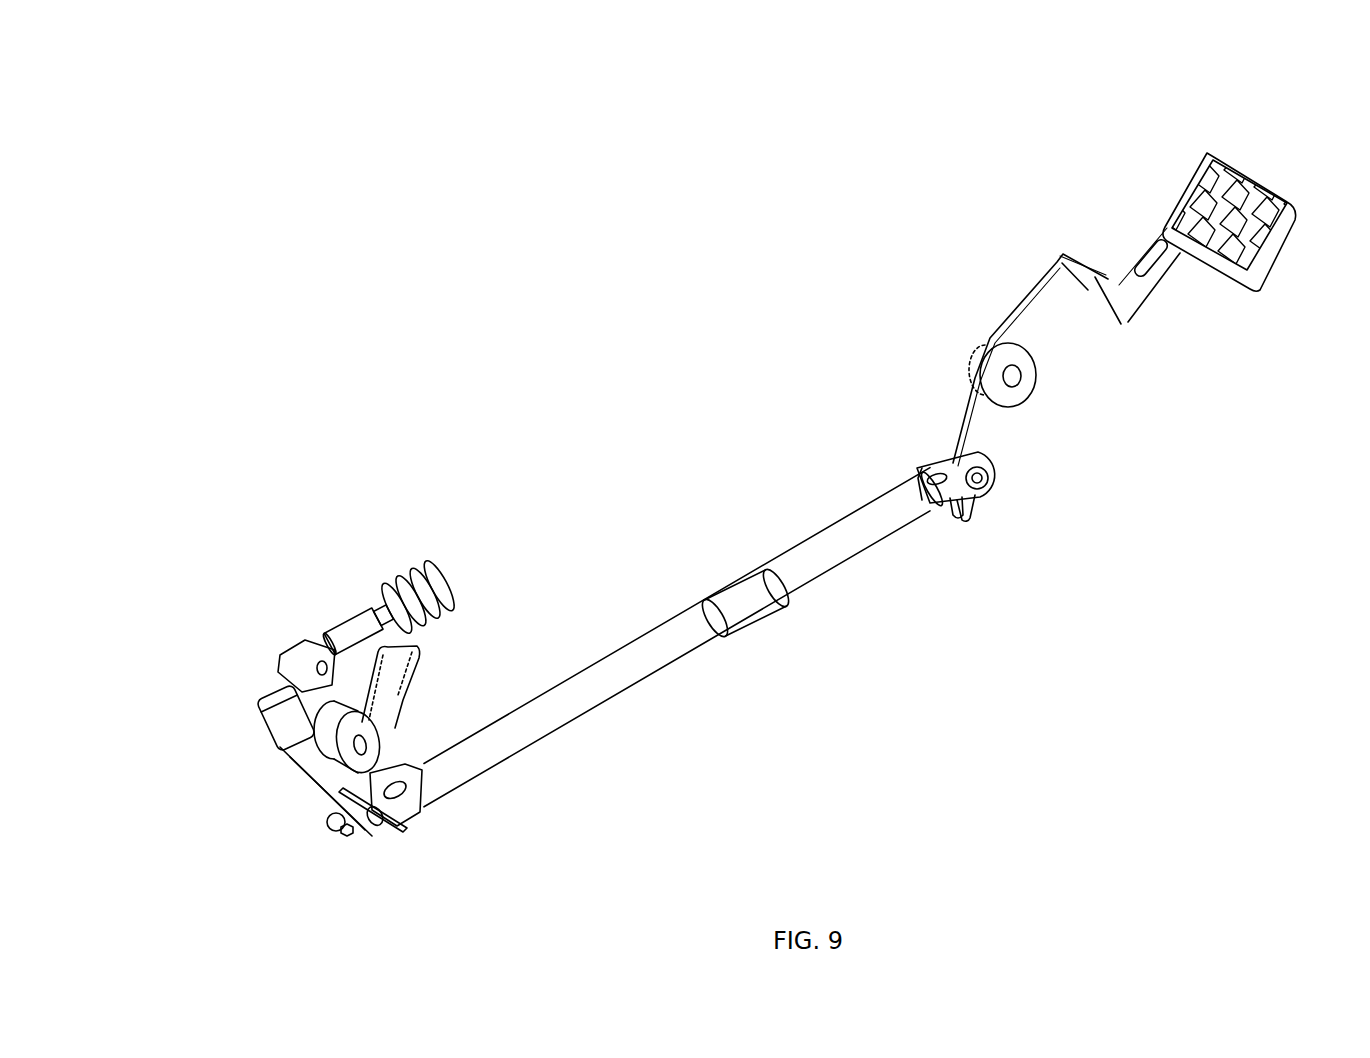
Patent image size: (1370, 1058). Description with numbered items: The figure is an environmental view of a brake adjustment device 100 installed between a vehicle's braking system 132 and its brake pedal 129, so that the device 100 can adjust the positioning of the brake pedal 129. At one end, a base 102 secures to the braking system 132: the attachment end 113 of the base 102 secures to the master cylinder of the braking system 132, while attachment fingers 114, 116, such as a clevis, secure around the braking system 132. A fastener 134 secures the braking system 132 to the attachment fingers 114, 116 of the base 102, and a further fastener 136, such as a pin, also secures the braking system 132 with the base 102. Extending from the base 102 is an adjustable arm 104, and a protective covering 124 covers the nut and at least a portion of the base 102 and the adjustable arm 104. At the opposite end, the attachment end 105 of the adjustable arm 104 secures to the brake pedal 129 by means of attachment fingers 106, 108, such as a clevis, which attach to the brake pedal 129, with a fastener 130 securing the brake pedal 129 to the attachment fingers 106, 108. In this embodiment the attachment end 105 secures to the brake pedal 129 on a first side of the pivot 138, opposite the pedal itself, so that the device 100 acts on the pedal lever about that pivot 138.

The brake adjustment device 100 is at (684, 684).
The base 102 is at (685, 632).
The adjustable arm 104 is at (948, 608).
The attachment end 105 is at (1007, 325).
The attachment finger 106 is at (857, 399).
The attachment finger 108 is at (977, 594).
The attachment end 113 is at (321, 880).
The attachment finger 114 is at (272, 850).
The attachment finger 116 is at (425, 791).
The protective covering 124 is at (732, 503).
The brake pedal 129 is at (1159, 170).
The fastener 130 is at (1090, 526).
The braking system 132 is at (343, 568).
The fastener 134 is at (387, 800).
The fastener 136 is at (468, 871).
The pivot 138 is at (1130, 394).